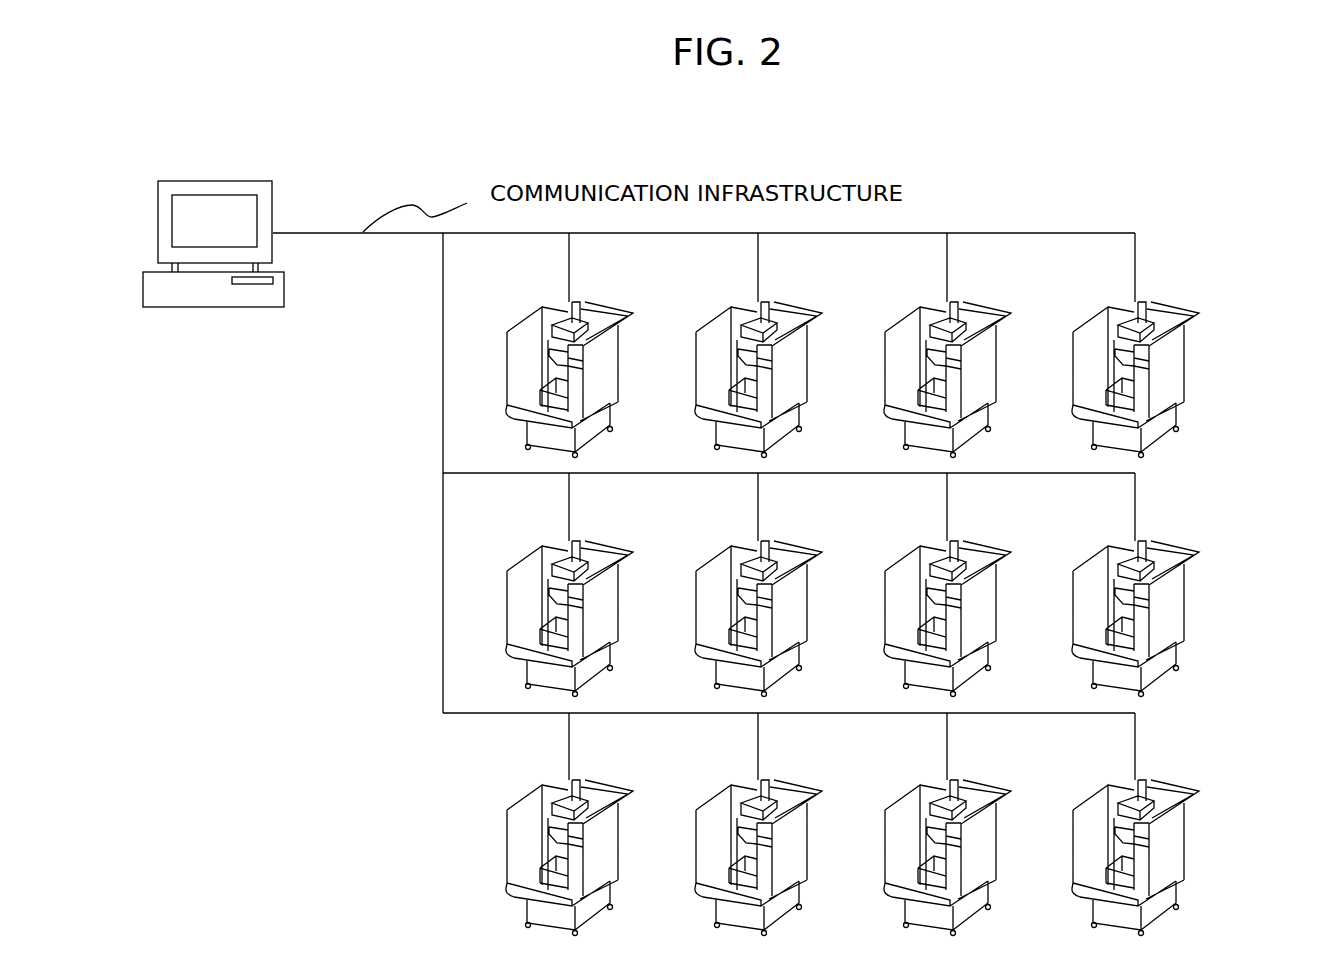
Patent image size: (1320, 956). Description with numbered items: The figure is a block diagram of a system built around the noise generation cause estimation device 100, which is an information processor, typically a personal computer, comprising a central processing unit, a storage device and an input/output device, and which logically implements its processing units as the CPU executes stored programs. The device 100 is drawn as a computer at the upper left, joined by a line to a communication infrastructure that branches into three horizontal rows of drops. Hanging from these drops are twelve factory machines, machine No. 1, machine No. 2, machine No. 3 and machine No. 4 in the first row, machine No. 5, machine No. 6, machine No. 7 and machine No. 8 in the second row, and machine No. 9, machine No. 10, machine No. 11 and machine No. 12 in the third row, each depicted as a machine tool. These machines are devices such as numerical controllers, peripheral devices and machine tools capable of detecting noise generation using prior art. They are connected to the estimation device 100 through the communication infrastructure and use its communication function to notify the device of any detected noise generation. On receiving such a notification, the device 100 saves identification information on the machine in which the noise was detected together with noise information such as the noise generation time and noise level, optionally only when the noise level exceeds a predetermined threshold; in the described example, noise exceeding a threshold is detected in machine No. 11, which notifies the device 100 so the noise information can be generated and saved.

The noise generation cause estimation device 100 is at (222, 180).
The machine No. 1 is at (600, 303).
The machine No. 2 is at (796, 364).
The machine No. 3 is at (985, 364).
The machine No. 4 is at (1173, 364).
The machine No. 5 is at (607, 603).
The machine No. 6 is at (796, 603).
The machine No. 7 is at (985, 603).
The machine No. 8 is at (1173, 603).
The machine No. 9 is at (607, 843).
The machine No. 10 is at (804, 843).
The machine No. 11 is at (993, 843).
The machine No. 12 is at (1181, 843).